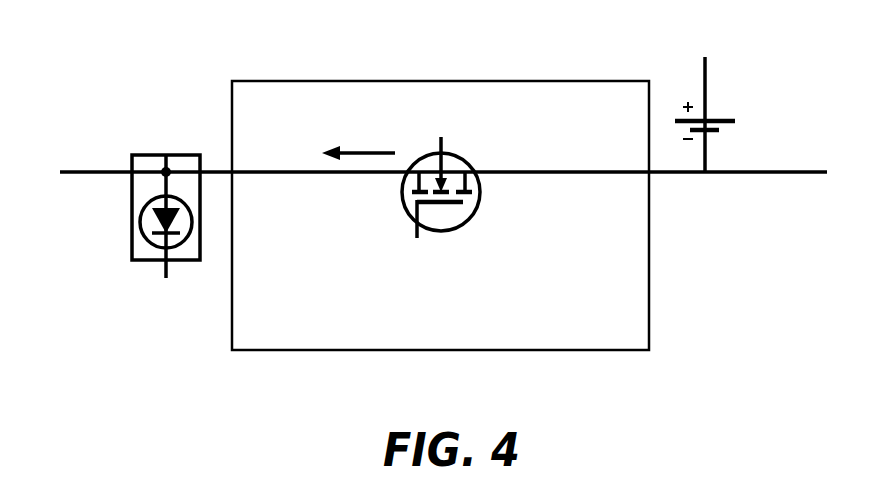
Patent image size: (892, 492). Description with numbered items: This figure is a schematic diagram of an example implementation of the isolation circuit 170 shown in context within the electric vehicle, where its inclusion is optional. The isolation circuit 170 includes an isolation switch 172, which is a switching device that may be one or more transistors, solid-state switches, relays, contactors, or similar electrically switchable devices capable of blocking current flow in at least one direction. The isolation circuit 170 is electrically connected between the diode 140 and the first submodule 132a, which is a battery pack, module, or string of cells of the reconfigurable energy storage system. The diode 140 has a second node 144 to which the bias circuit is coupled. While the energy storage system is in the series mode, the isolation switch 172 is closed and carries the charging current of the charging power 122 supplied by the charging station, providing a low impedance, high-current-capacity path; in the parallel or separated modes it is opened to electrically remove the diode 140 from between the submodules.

The isolation circuit 170 is at (290, 81).
The charging power 122 is at (386, 139).
The diode 140 is at (131, 233).
The second node 144 is at (166, 160).
The isolation switch 172 is at (465, 217).
The first submodule 132a is at (720, 121).